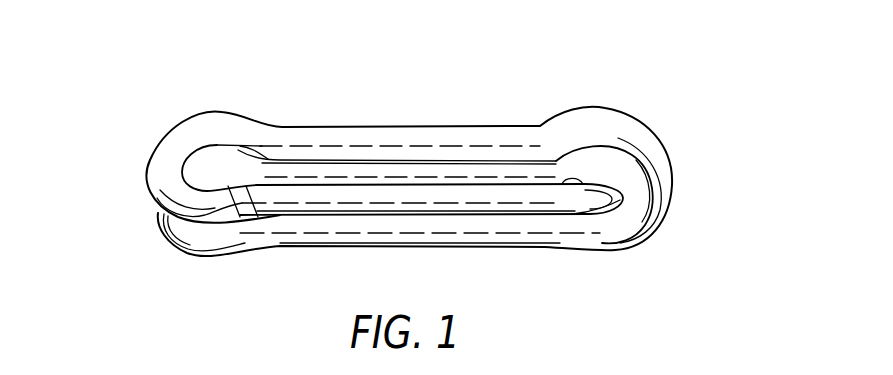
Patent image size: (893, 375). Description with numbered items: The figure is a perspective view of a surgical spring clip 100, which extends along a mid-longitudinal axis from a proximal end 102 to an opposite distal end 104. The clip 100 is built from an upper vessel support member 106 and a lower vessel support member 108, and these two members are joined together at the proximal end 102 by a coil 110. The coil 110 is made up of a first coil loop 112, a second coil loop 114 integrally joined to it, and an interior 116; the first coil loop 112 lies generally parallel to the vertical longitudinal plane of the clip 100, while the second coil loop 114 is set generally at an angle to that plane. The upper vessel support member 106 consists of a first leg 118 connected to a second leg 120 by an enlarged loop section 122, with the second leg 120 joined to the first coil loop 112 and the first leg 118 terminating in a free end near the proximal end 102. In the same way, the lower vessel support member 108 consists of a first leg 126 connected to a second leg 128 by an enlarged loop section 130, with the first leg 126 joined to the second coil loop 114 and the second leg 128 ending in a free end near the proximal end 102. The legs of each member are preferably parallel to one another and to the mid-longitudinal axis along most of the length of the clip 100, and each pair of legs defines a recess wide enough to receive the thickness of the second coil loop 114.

The surgical spring clip 100 is at (150, 87).
The proximal end 102 is at (680, 127).
The distal end 104 is at (135, 201).
The upper vessel support member 106 is at (437, 133).
The lower vessel support member 108 is at (505, 234).
The coil 110 is at (663, 212).
The first coil loop 112 is at (573, 108).
The second coil loop 114 is at (650, 224).
The interior 116 is at (613, 212).
The first leg 118 is at (326, 206).
The second leg 120 is at (325, 128).
The enlarged loop section 122 is at (157, 152).
The first leg 126 is at (395, 233).
The second leg 128 is at (303, 168).
The enlarged loop section 130 is at (187, 240).